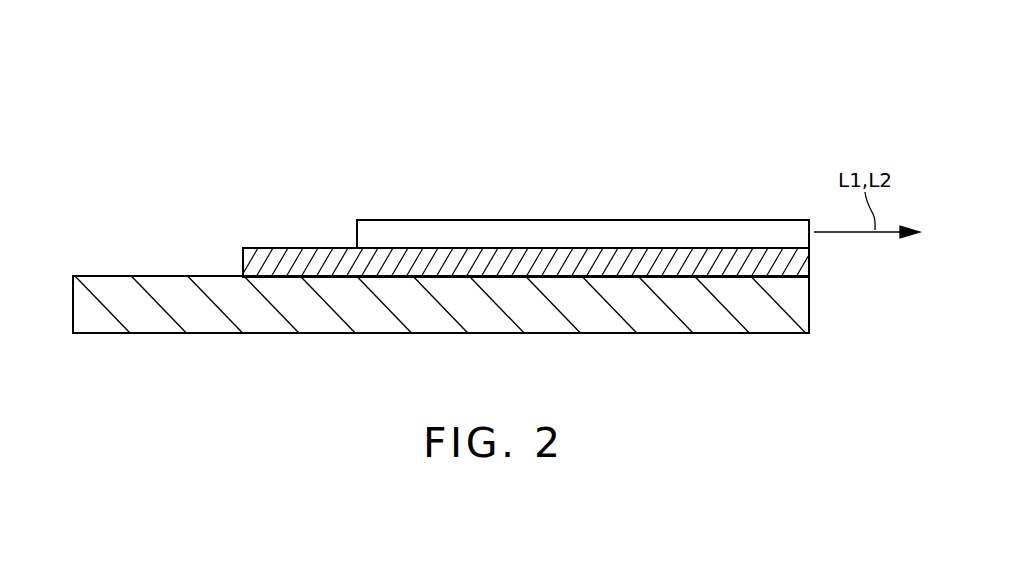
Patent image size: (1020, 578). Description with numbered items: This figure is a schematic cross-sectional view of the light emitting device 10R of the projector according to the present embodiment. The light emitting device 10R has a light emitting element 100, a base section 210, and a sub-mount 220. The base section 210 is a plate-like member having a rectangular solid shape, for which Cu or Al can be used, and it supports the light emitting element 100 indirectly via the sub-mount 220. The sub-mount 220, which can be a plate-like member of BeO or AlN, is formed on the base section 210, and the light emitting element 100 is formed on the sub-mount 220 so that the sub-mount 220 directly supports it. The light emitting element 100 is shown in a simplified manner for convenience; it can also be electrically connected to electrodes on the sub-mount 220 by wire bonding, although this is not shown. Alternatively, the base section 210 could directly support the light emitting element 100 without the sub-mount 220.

The light emitting device 10R is at (467, 241).
The light emitting element 100 is at (573, 232).
The base section 210 is at (435, 331).
The sub-mount 220 is at (249, 260).